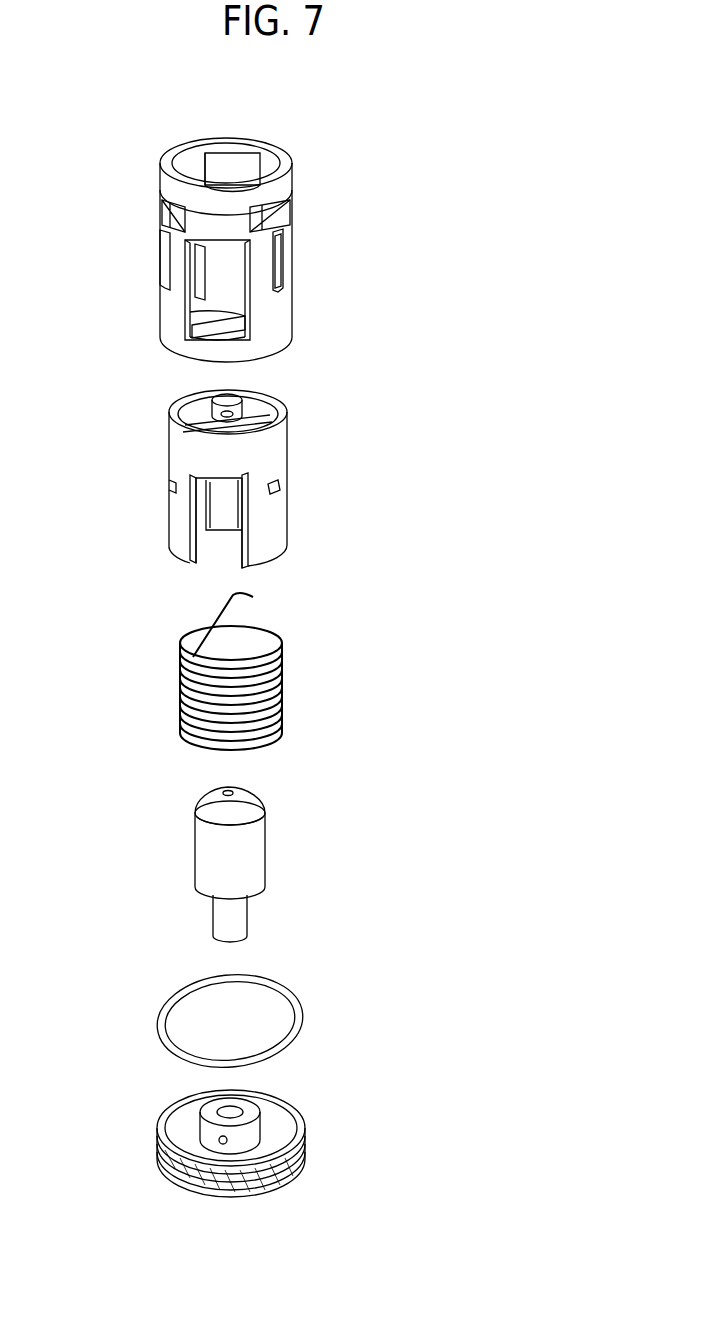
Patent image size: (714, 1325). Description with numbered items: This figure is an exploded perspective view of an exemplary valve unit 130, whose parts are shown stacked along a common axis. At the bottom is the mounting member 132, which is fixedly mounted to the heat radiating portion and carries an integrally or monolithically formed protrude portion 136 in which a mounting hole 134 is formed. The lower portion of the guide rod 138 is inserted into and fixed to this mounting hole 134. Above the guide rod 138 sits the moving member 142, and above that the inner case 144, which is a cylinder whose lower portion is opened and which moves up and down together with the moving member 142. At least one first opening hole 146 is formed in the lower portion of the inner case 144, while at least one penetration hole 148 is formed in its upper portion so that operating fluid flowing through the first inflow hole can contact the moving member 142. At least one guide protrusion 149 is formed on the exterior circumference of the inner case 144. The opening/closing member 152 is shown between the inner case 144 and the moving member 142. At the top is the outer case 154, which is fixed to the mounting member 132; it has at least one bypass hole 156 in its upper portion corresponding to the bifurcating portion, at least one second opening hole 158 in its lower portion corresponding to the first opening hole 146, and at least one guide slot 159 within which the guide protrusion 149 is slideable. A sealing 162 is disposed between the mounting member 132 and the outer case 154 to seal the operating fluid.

The valve unit 130 is at (418, 220).
The mounting member 132 is at (285, 1177).
The mounting hole 134 is at (223, 1105).
The protrude portion 136 is at (197, 1125).
The guide rod 138 is at (235, 917).
The moving member 142 is at (244, 849).
The inner case 144 is at (177, 440).
The first opening hole 146 is at (250, 542).
The penetration hole 148 is at (262, 408).
The guide protrusion 149 is at (289, 488).
The opening/closing member 152 is at (280, 680).
The outer case 154 is at (277, 135).
The bypass hole 156 is at (205, 168).
The second opening hole 158 is at (200, 325).
The guide slot 159 is at (285, 252).
The sealing 162 is at (296, 1005).